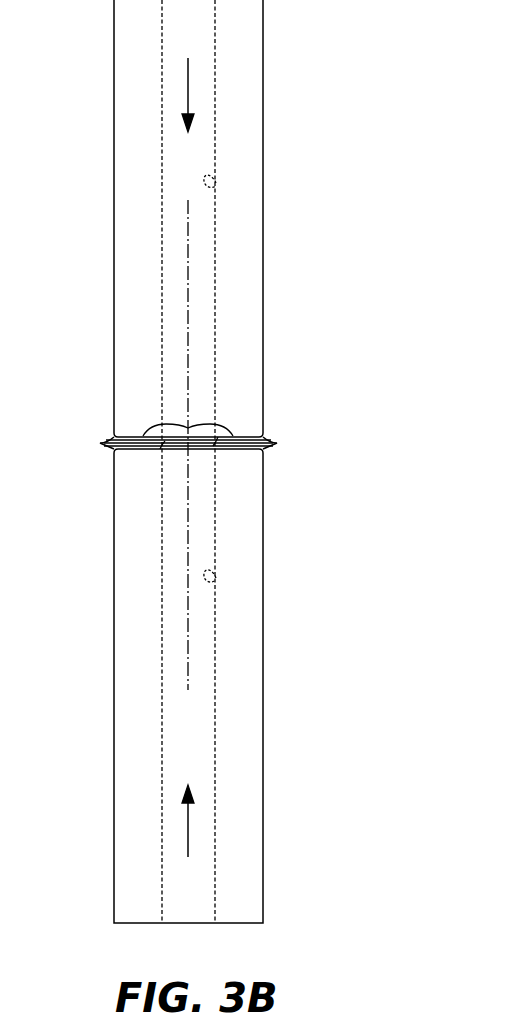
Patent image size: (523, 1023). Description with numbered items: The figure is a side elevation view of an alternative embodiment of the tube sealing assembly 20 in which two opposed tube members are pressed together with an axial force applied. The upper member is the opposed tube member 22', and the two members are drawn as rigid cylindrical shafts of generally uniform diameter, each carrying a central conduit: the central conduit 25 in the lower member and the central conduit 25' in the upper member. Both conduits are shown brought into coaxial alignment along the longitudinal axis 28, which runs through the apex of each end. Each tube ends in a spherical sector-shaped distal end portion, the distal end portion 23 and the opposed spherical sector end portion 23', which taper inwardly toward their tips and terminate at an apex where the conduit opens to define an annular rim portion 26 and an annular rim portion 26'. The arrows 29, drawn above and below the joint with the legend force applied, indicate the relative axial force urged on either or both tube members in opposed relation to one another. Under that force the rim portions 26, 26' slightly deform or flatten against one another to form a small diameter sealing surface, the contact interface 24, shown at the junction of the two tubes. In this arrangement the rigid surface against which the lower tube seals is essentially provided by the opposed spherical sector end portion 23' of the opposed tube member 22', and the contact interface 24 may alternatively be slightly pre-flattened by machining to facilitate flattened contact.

The tube sealing assembly 20 is at (213, 461).
The opposed tube member 22' is at (151, 461).
The spherical sector-shaped distal end portion 23 is at (299, 413).
The opposed spherical sector end portion 23' is at (68, 460).
The contact interface 24 is at (187, 428).
The central conduit 25 is at (279, 562).
The central conduit 25' is at (281, 166).
The annular rim portion 26 is at (262, 374).
The annular rim portion 26' is at (91, 486).
The longitudinal axis 28 is at (190, 272).
The arrows 29 is at (188, 86).